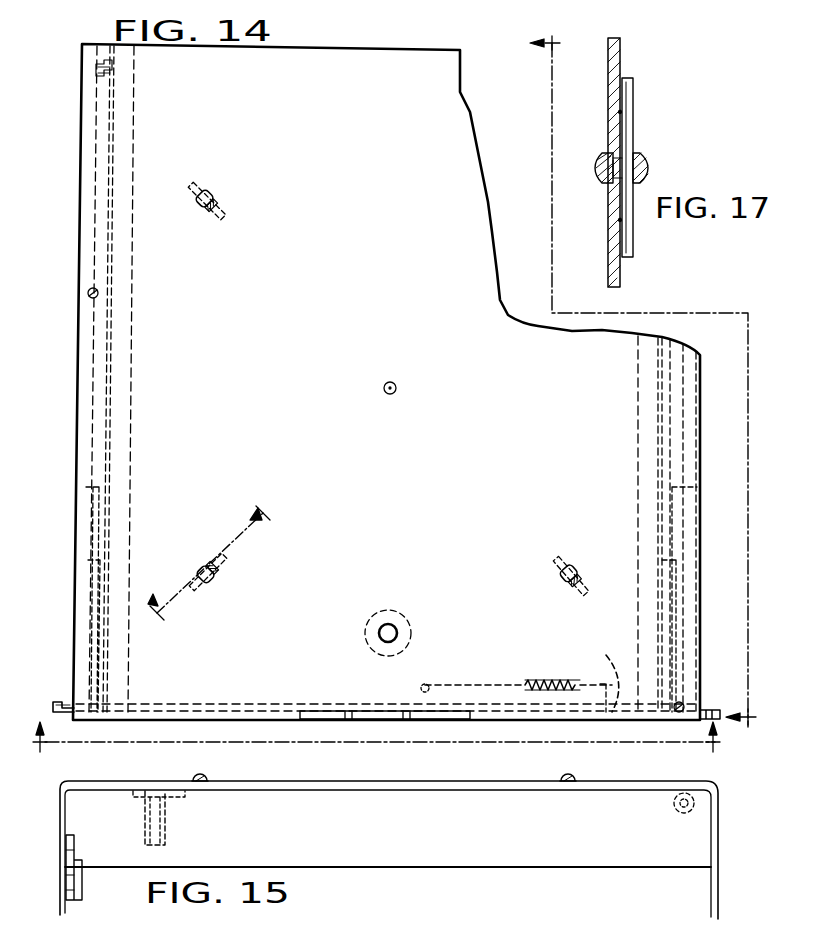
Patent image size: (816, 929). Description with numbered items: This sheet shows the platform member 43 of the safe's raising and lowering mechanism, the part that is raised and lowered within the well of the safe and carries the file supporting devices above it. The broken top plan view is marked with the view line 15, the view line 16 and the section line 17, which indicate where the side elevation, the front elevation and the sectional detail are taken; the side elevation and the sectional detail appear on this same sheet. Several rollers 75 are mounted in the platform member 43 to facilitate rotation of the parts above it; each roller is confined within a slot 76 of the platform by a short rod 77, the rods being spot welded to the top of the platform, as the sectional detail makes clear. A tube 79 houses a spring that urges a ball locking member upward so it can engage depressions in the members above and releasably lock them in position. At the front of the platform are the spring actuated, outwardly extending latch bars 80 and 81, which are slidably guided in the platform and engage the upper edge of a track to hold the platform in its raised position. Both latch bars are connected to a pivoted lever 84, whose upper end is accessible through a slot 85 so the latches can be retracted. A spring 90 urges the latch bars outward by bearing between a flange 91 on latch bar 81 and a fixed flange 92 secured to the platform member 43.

In FIG. 14, the platform member 43 is at (480, 468).
In FIG. 17, the platform member 43 is at (620, 68).
In FIG. 15, the platform member 43 is at (719, 815).
In FIG. 14, the rollers 75 is at (203, 195).
In FIG. 17, the rollers 75 is at (647, 160).
In FIG. 15, the rollers 75 is at (206, 778).
In FIG. 17, the slots 76 is at (607, 153).
In FIG. 14, the short rods 77 is at (220, 209).
In FIG. 17, the short rods 77 is at (633, 243).
In FIG. 14, the tube 79 is at (395, 625).
In FIG. 15, the tube 79 is at (160, 808).
In FIG. 14, the latch bar 80 is at (58, 700).
In FIG. 14, the latch bar 81 is at (712, 708).
In FIG. 15, the latch bar 81 is at (62, 852).
In FIG. 14, the lever 84 is at (350, 722).
In FIG. 15, the lever 84 is at (392, 923).
In FIG. 15, the slot 85 is at (459, 923).
In FIG. 14, the spring 90 is at (550, 680).
In FIG. 15, the spring 90 is at (542, 923).
In FIG. 14, the flange 91 is at (440, 683).
In FIG. 15, the flange 91 is at (610, 923).
In FIG. 14, the fixed flange 92 is at (604, 657).
In FIG. 14, the section line 15— 15 is at (653, 393).
In FIG. 14, the section line 16— 16 is at (373, 739).
In FIG. 14, the section line 17— 17 is at (210, 567).